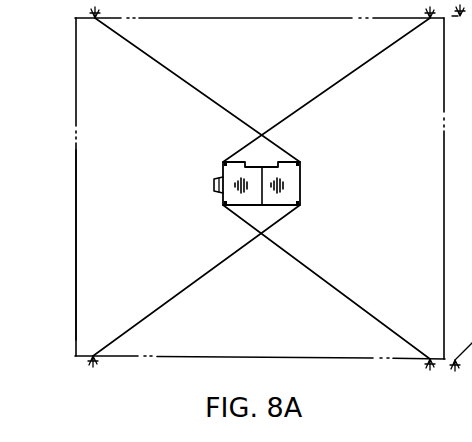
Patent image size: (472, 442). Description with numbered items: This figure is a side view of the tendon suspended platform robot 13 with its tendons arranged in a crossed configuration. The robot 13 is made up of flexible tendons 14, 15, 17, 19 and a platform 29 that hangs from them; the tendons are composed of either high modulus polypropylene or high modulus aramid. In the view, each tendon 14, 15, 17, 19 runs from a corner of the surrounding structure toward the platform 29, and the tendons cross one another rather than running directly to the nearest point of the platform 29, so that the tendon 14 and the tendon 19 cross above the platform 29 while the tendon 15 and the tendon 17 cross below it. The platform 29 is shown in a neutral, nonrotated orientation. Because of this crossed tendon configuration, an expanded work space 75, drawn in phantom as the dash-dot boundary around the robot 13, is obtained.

The tendon suspended platform robot 13 is at (62, 77).
The flexible tendon 14 is at (162, 66).
The flexible tendon 15 is at (170, 299).
The flexible tendon 17 is at (347, 293).
The flexible tendon 19 is at (334, 86).
The platform 29 is at (302, 184).
The expanded work space 75 is at (75, 187).